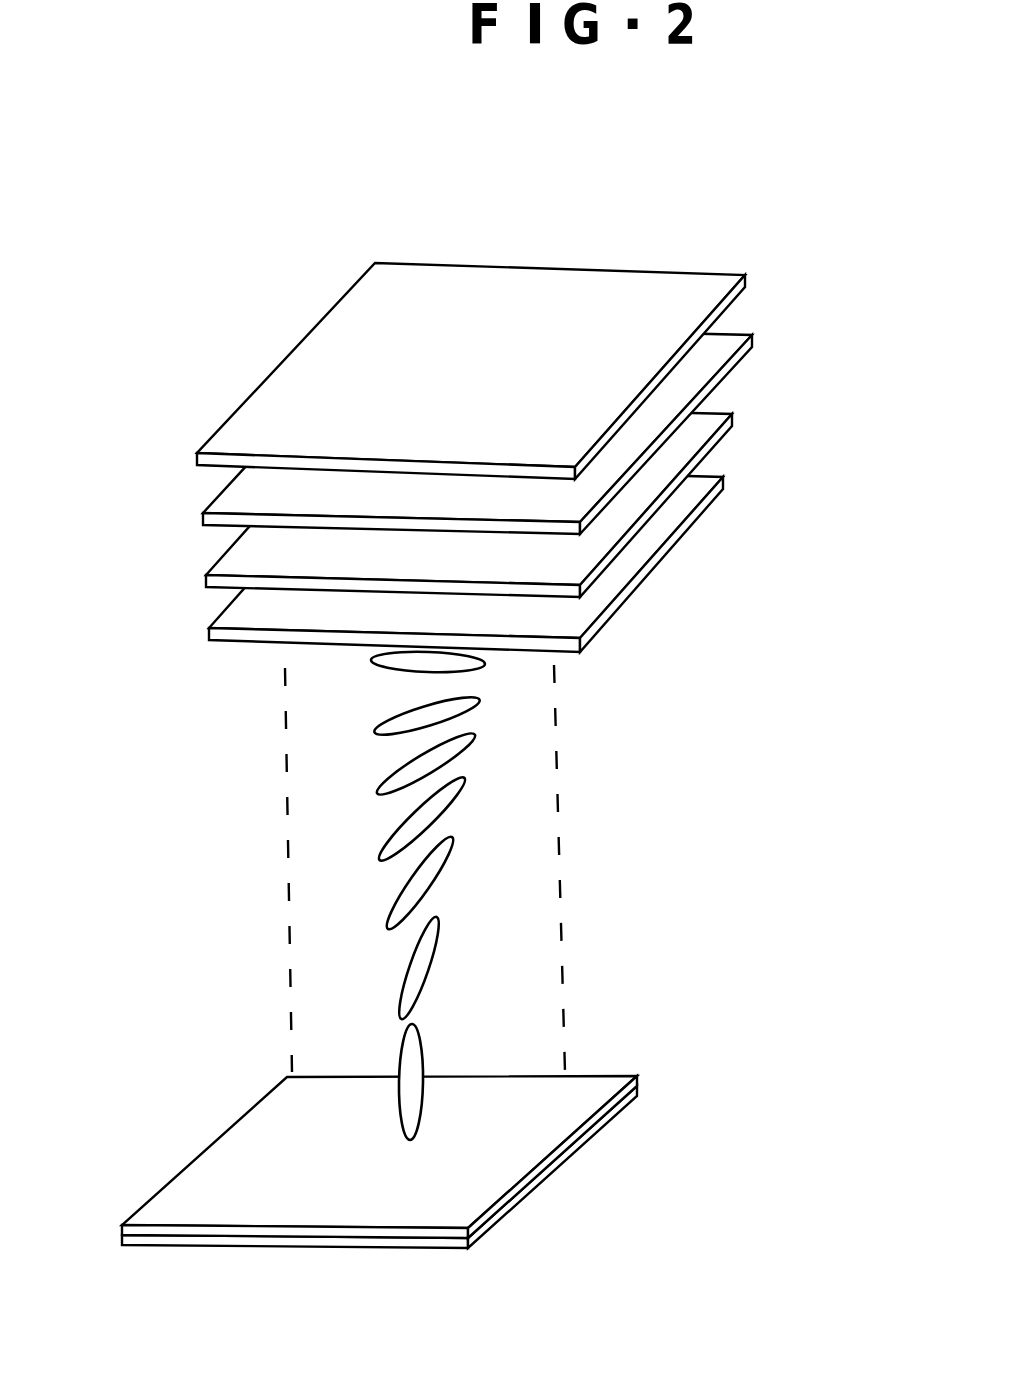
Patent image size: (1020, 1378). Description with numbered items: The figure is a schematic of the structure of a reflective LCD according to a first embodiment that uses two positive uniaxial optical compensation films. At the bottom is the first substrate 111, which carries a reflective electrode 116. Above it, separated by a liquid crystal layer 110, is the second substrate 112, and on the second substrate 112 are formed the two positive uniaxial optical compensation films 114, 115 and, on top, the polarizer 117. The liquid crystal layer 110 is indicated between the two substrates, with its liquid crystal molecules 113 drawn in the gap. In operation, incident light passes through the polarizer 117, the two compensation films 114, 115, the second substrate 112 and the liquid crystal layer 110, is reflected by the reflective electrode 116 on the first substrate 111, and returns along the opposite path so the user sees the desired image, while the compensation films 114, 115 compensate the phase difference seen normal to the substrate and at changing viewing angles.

The liquid crystal layer 110 is at (607, 663).
The first substrate 111 is at (302, 1240).
The second substrate 112 is at (222, 640).
The liquid crystal molecule 113 is at (412, 983).
The positive uniaxial optical compensation film 114 is at (230, 558).
The positive uniaxial optical compensation film 115 is at (242, 496).
The reflective electrode 116 is at (192, 1175).
The polarizer 117 is at (288, 387).